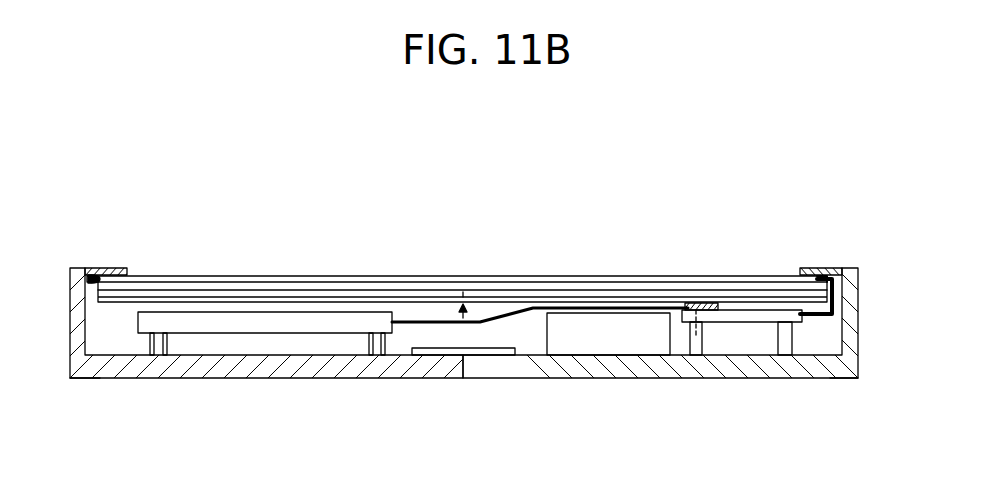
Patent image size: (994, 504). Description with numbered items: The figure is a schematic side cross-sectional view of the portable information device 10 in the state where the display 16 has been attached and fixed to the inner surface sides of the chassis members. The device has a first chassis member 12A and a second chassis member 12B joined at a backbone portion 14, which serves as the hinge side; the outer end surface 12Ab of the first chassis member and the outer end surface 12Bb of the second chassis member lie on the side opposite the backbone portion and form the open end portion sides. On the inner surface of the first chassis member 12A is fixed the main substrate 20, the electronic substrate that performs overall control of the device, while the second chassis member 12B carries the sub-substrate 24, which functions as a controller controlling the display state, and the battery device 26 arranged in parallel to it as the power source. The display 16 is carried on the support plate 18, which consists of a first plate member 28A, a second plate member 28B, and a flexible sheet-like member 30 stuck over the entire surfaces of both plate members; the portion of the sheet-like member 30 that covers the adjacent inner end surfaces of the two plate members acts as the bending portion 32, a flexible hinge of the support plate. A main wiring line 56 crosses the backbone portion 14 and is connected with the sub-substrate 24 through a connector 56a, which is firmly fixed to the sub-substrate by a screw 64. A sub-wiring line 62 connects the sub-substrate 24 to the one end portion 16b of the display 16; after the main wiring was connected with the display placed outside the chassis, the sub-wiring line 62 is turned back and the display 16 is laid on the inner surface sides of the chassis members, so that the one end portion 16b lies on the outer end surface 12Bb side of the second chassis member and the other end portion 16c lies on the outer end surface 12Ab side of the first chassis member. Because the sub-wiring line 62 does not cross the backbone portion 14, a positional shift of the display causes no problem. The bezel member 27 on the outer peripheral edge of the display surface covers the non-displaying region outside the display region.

The portable information device 10 is at (117, 158).
The first chassis member 12A is at (212, 385).
The outer end surface 12Ab is at (68, 378).
The second chassis member 12B is at (697, 385).
The outer end surface 12Bb is at (858, 360).
The backbone portion 14 is at (497, 378).
The display 16 is at (451, 235).
The one end portion 16b is at (829, 275).
The another end portion 16c is at (93, 272).
The support plate 18 is at (588, 207).
The main substrate 20 is at (286, 322).
The sub-substrate 24 is at (762, 318).
The battery device 26 is at (580, 378).
The bezel member 27 is at (115, 268).
The first plate member 28A is at (398, 300).
The second plate member 28B is at (527, 292).
The sheet-like member 30 is at (578, 282).
The bending portion 32 is at (447, 378).
The main wiring line 56 is at (398, 378).
The connector 56a is at (715, 303).
The sub-wiring line 62 is at (835, 305).
The screw 64 is at (692, 305).